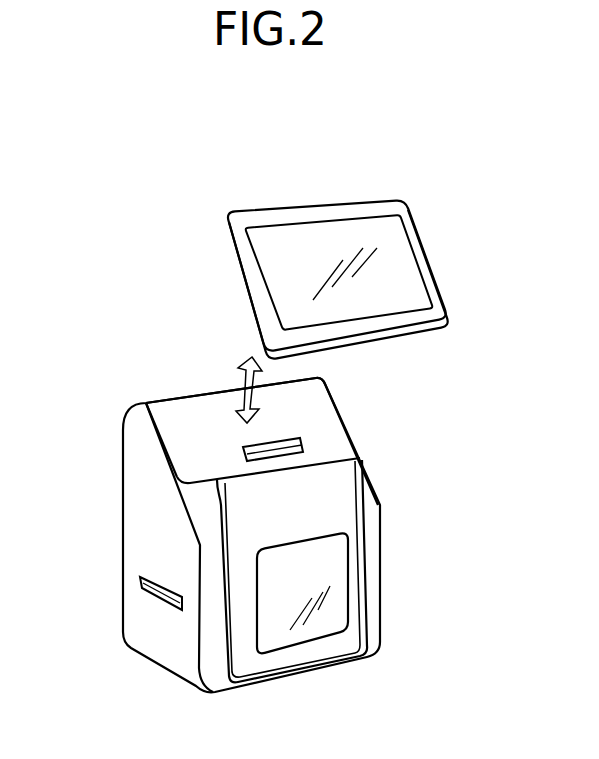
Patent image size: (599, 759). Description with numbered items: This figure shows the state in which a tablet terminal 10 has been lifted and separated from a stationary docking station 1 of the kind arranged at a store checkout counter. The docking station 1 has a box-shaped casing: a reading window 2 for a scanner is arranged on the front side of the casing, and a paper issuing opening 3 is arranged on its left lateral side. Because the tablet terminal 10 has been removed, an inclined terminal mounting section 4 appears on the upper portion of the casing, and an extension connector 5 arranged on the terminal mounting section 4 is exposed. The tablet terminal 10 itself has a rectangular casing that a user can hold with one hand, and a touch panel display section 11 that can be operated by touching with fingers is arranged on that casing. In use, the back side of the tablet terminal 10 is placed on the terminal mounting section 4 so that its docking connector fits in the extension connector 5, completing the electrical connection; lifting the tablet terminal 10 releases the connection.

The docking station 1 is at (122, 468).
The reading window 2 is at (337, 572).
The paper issuing opening 3 is at (153, 600).
The terminal mounting section 4 is at (317, 395).
The extension connector 5 is at (287, 440).
The tablet terminal 10 is at (318, 203).
The touch panel display section 11 is at (400, 283).